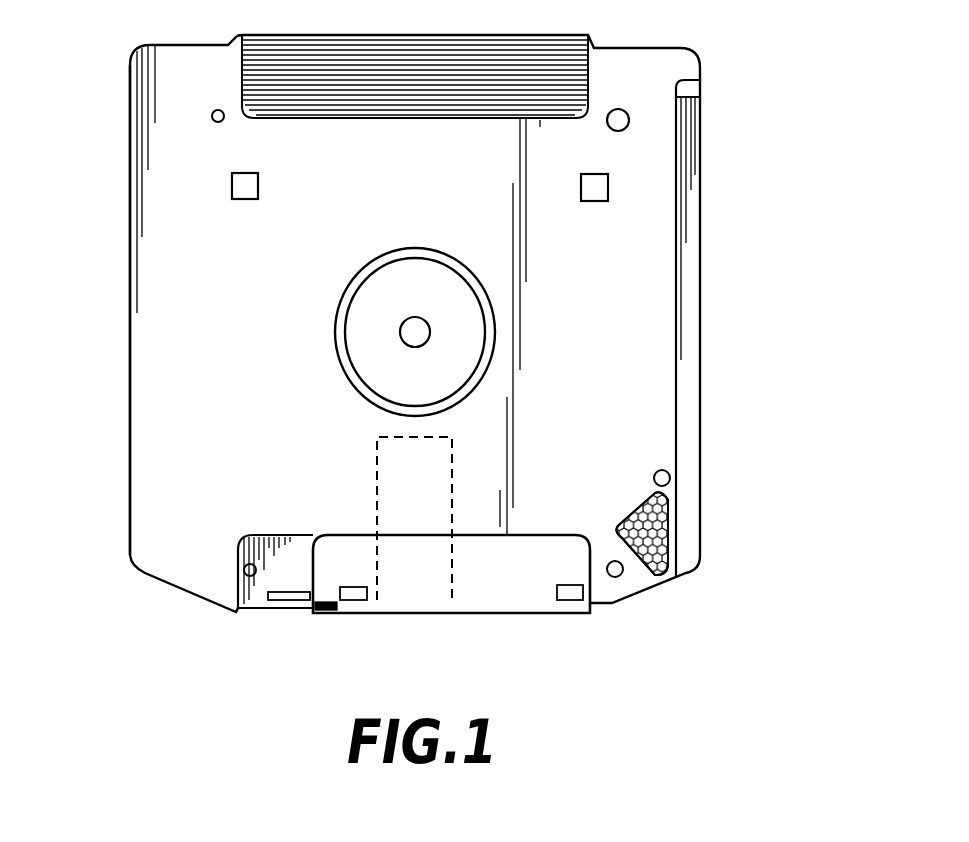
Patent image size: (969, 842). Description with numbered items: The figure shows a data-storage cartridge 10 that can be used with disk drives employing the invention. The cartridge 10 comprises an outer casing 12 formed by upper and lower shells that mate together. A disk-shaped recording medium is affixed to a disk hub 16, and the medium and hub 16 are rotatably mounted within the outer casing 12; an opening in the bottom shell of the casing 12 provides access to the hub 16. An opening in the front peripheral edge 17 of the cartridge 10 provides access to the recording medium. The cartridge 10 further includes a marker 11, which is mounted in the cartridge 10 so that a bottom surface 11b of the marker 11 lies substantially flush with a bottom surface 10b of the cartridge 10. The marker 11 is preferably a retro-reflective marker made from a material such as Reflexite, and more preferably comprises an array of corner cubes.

The data-storage cartridge 10 is at (750, 127).
The bottom surface of cartridge 10b is at (658, 412).
The marker 11 is at (630, 498).
The bottom surface of marker 11b is at (663, 577).
The outer casing 12 is at (130, 383).
The disk hub 16 is at (442, 250).
The front peripheral edge 17 is at (237, 613).